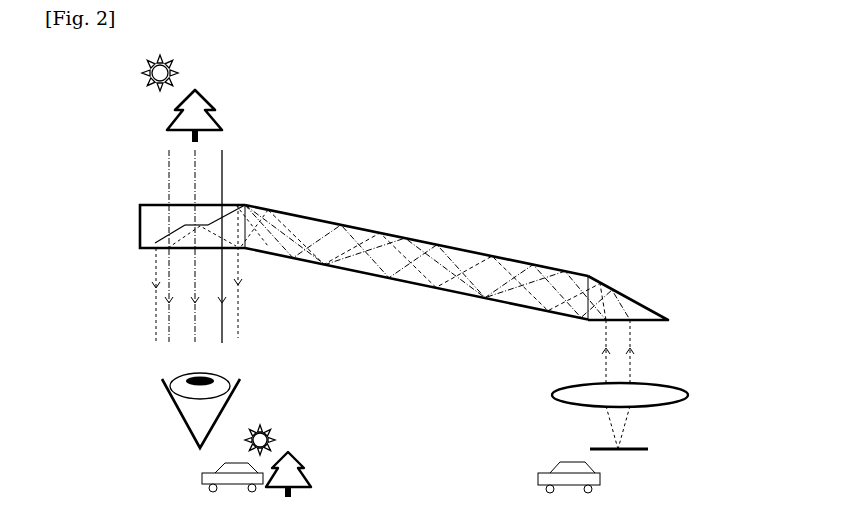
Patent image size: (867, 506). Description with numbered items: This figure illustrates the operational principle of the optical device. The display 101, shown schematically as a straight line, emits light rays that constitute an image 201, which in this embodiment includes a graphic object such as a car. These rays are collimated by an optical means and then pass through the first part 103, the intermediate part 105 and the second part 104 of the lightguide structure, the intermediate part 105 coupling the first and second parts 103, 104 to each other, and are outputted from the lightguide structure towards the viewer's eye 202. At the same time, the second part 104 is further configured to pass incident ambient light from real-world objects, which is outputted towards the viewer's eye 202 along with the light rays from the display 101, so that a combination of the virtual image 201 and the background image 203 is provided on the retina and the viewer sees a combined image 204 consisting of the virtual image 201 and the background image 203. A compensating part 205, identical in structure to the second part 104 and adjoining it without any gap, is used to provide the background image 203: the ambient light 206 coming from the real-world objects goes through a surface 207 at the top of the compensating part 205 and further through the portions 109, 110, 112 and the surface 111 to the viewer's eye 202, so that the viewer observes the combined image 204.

The display 101 is at (618, 450).
The first part 103 is at (612, 300).
The second part 104 is at (240, 212).
The intermediate part 105 is at (422, 252).
The portion 109 is at (155, 243).
The portion 110 is at (228, 210).
The surface 111 is at (183, 250).
The portion 112 is at (184, 224).
The image 201 is at (553, 472).
The viewer's eye 202 is at (195, 415).
The background image 203 is at (208, 88).
The combined image 204 is at (265, 461).
The compensating part 205 is at (147, 213).
The ambient light 206 is at (192, 318).
The surface 207 is at (186, 220).